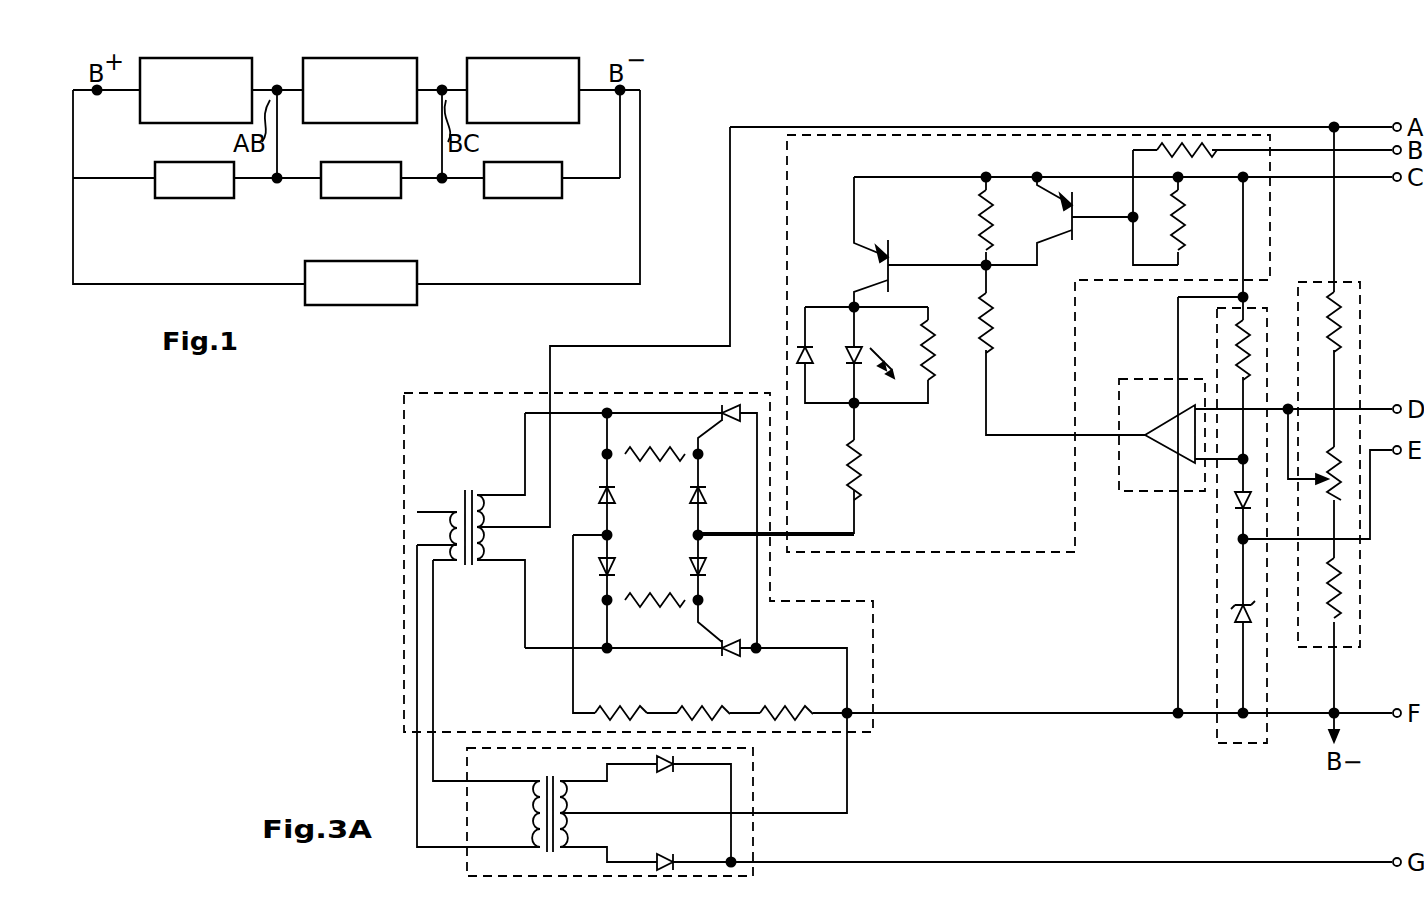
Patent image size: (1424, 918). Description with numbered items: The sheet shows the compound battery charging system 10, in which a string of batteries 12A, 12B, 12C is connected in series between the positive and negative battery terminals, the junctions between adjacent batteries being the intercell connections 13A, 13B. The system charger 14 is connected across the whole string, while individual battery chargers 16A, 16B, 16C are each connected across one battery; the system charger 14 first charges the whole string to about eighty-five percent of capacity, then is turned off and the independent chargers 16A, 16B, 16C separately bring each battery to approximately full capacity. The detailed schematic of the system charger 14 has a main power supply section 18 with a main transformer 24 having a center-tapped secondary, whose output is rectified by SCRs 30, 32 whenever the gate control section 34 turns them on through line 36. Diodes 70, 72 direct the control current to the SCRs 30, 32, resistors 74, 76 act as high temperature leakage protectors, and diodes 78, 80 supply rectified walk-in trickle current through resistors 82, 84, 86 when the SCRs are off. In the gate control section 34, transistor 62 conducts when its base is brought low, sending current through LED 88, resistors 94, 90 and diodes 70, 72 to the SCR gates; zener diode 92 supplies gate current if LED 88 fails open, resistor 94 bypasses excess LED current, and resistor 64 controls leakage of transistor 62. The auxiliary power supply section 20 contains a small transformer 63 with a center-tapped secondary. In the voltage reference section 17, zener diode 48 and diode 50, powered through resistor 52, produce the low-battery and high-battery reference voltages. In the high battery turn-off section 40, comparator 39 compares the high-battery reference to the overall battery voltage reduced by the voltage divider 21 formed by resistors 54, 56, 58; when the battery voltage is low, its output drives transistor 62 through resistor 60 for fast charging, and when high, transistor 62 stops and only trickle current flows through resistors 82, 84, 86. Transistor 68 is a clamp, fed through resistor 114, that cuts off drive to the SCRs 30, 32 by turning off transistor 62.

In FIG. 1, the compound battery charging system 10 is at (620, 50).
In FIG. 1, the battery 12A is at (175, 60).
In FIG. 1, the battery 12B is at (339, 60).
In FIG. 1, the battery 12C is at (523, 60).
In FIG. 1, the intercell connection AB 13A is at (277, 86).
In FIG. 1, the intercell connection BC 13B is at (442, 86).
In FIG. 1, the system charger 14 is at (385, 290).
In FIG. 1, the individual battery charger 16A is at (205, 190).
In FIG. 1, the individual battery charger 16B is at (362, 188).
In FIG. 1, the individual battery charger 16C is at (510, 188).
In FIG. 3A, the voltage reference section 17 is at (1228, 745).
In FIG. 3A, the main power supply section 18 is at (403, 606).
In FIG. 3A, the auxiliary power supply section 20 is at (476, 878).
In FIG. 3A, the voltage divider 21 is at (1318, 284).
In FIG. 3A, the main transformer 24 is at (486, 578).
In FIG. 3A, the SCR 30 is at (736, 405).
In FIG. 3A, the SCR 32 is at (733, 658).
In FIG. 3A, the gate control section 34 is at (786, 296).
In FIG. 3A, the line 36 is at (812, 530).
In FIG. 3A, the comparator 39 is at (1163, 447).
In FIG. 3A, the high battery turn-off section 40 is at (1170, 493).
In FIG. 3A, the zener diode 48 is at (1236, 612).
In FIG. 3A, the diode 50 is at (1238, 496).
In FIG. 3A, the resistor 52 is at (1248, 356).
In FIG. 3A, the resistor 54 is at (1343, 336).
In FIG. 3A, the resistor 56 is at (1340, 500).
In FIG. 3A, the resistor 58 is at (1346, 586).
In FIG. 3A, the resistor 60 is at (990, 336).
In FIG. 3A, the transistor 62 is at (890, 250).
In FIG. 3A, the small transformer 63 is at (539, 781).
In FIG. 3A, the resistor 64 is at (982, 232).
In FIG. 3A, the transistor 68 is at (1074, 217).
In FIG. 3A, the diode 70 is at (730, 486).
In FIG. 3A, the diode 72 is at (704, 578).
In FIG. 3A, the resistor 74 is at (666, 454).
In FIG. 3A, the resistor 76 is at (644, 596).
In FIG. 3A, the diode 78 is at (600, 494).
In FIG. 3A, the diode 80 is at (620, 570).
In FIG. 3A, the resistor 82 is at (627, 712).
In FIG. 3A, the resistor 84 is at (697, 712).
In FIG. 3A, the resistor 86 is at (780, 712).
In FIG. 3A, the light emitting diode 88 is at (857, 352).
In FIG. 3A, the resistor 90 is at (862, 474).
In FIG. 3A, the zener diode 92 is at (818, 364).
In FIG. 3A, the resistor 94 is at (930, 360).
In FIG. 3A, the resistor 114 is at (1162, 150).